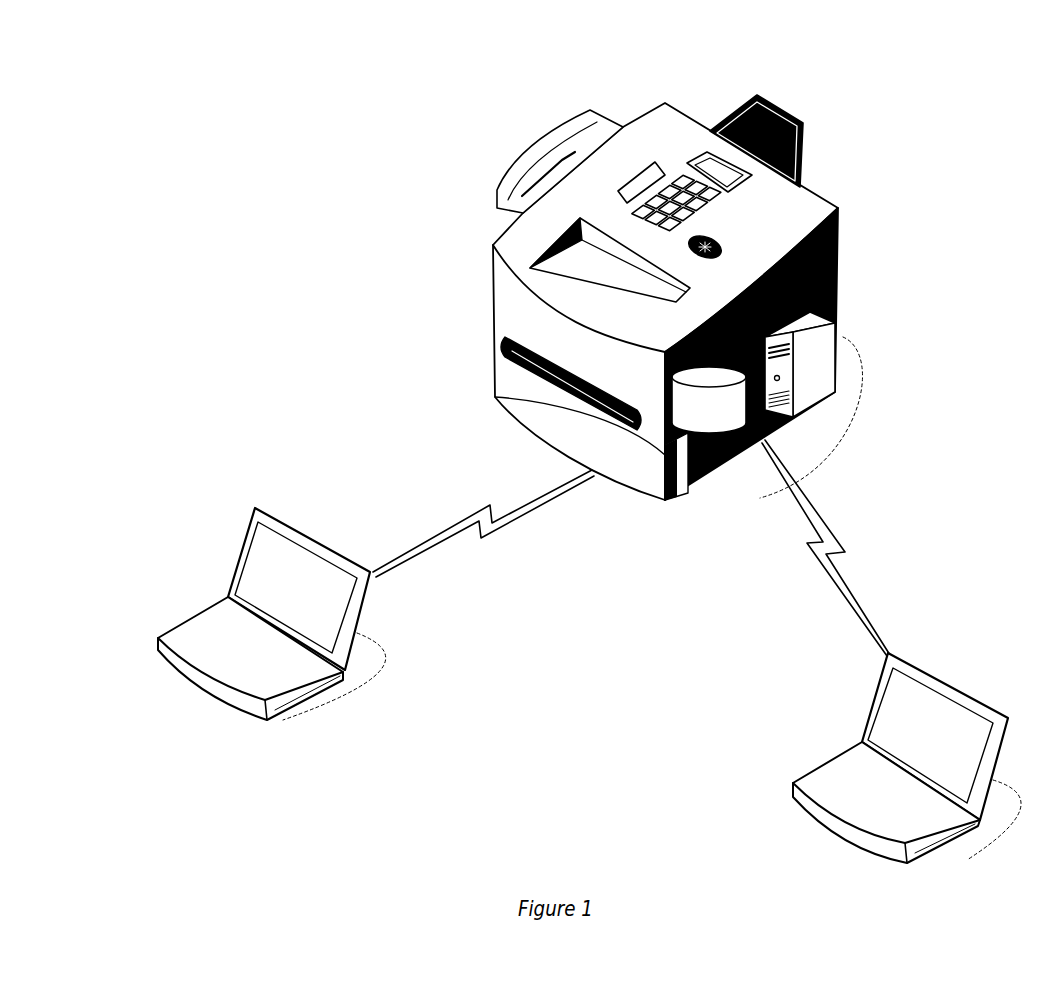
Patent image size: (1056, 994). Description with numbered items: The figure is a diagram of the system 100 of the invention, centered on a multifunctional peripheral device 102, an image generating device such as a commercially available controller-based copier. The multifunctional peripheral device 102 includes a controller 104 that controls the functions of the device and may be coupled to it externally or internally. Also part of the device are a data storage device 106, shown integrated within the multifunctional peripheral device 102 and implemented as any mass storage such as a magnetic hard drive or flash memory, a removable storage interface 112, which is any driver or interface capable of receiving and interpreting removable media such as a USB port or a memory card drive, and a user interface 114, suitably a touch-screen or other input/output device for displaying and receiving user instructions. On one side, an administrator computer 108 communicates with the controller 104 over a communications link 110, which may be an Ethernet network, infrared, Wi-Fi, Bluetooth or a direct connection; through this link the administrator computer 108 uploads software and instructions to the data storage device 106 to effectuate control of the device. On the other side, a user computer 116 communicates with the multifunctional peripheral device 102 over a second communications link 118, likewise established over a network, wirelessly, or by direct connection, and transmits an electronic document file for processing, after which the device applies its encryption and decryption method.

The system 100 is at (861, 64).
The multifunctional peripheral device 102 is at (836, 208).
The controller 104 is at (832, 352).
The data storage device 106 is at (715, 423).
The administrator computer 108 is at (903, 652).
The communications link 110 is at (843, 548).
The removable storage interface 112 is at (633, 172).
The user interface 114 is at (706, 157).
The user computer 116 is at (287, 520).
The communications link 118 is at (492, 533).